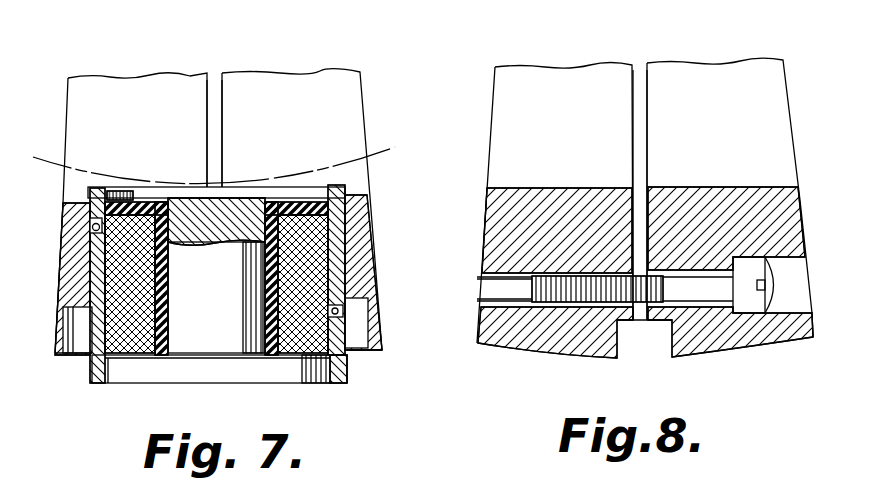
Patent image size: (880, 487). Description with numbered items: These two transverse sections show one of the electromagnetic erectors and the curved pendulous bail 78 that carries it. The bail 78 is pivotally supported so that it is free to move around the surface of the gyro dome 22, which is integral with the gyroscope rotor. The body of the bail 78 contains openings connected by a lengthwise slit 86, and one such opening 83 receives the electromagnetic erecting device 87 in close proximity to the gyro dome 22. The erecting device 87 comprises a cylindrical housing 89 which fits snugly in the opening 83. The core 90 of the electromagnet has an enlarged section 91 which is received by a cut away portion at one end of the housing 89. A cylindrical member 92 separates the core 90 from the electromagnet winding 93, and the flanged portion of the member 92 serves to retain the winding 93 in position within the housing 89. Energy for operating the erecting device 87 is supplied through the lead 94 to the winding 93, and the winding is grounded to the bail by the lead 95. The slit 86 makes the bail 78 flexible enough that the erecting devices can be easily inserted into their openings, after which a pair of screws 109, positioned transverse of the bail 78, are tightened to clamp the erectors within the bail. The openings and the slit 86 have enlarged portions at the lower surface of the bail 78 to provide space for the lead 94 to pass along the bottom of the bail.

In FIG. 7, the dome 22 is at (55, 163).
In FIG. 7, the pendulous bail 78 is at (358, 117).
In FIG. 8, the pendulous bail 78 is at (765, 65).
In FIG. 7, the opening 83 is at (335, 238).
In FIG. 7, the slit 86 is at (215, 80).
In FIG. 8, the slit 86 is at (643, 70).
In FIG. 7, the electromagnetic erecting device 87 is at (90, 380).
In FIG. 7, the cylindrical housing 89 is at (335, 215).
In FIG. 7, the core 90 is at (216, 275).
In FIG. 7, the enlarged section 91 is at (282, 372).
In FIG. 7, the cylindrical member 92 is at (163, 335).
In FIG. 7, the electromagnet winding 93 is at (317, 270).
In FIG. 7, the lead 94 is at (332, 313).
In FIG. 7, the lead 95 is at (92, 224).
In FIG. 8, the screws 109 is at (718, 292).